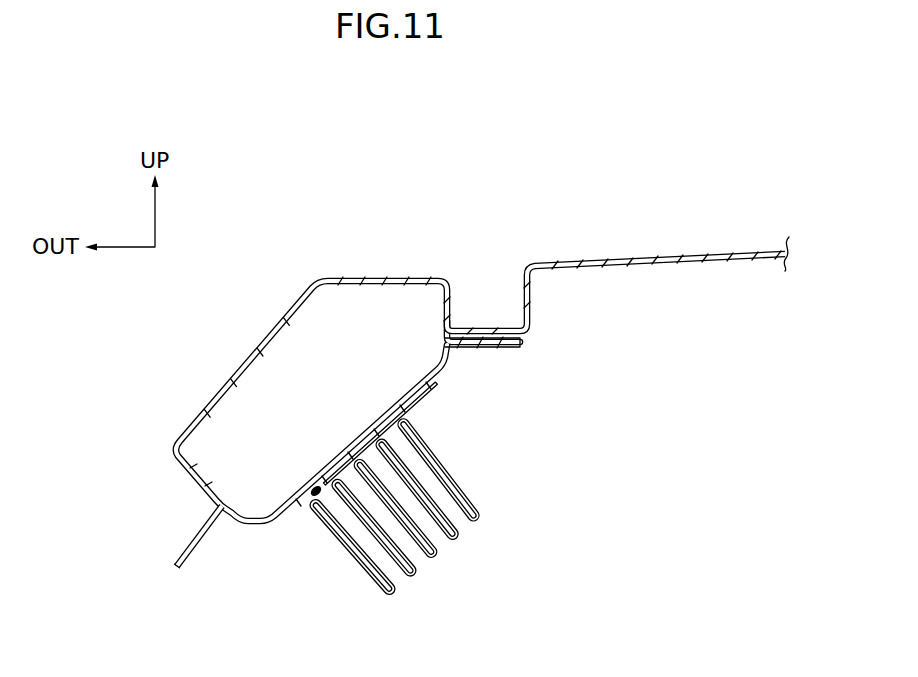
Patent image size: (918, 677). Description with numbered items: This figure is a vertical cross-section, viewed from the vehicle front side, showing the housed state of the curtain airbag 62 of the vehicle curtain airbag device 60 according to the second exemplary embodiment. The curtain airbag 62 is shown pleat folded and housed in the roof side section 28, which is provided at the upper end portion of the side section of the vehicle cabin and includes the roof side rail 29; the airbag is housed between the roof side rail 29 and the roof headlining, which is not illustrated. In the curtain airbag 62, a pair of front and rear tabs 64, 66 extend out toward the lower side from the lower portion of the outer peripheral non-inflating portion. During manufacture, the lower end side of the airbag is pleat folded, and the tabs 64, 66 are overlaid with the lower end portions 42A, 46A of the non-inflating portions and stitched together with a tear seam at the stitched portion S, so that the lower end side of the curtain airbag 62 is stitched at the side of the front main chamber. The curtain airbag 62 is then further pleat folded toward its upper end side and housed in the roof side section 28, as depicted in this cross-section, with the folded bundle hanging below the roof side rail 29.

The roof side section 28 is at (370, 256).
The roof side rail 29 is at (268, 328).
The lower end portion of the non-inflating portion 42A is at (355, 433).
The lower end portion of the non-inflating portion 46A is at (320, 482).
The vehicle curtain airbag device 60 is at (429, 505).
The curtain airbag 62 is at (446, 506).
The front tab 64 is at (356, 510).
The rear tab 66 is at (338, 488).
The stitched portion S is at (318, 478).